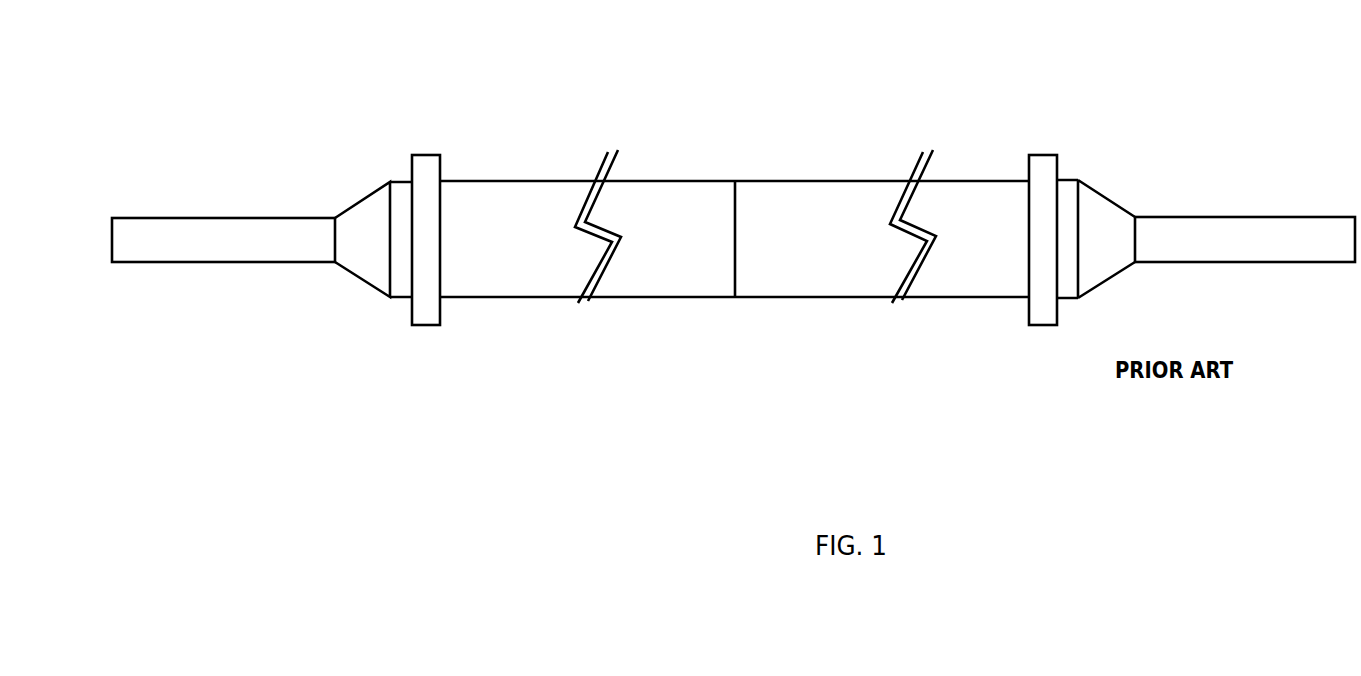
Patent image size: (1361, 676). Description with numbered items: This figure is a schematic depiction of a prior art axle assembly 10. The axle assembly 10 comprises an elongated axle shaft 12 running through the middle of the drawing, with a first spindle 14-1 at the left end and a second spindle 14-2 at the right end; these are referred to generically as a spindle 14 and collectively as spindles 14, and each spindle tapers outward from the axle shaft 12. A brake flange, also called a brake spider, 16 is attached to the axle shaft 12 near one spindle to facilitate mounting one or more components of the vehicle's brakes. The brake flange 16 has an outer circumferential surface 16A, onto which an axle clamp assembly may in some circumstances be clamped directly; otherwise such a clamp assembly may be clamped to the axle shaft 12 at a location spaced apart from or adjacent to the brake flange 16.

The axle assembly 10 is at (765, 150).
The axle shaft 12 is at (865, 195).
The spindle 14 is at (733, 176).
The first spindle 14-1 is at (290, 232).
The second spindle 14-2 is at (1190, 233).
The brake flange 16 is at (1047, 198).
The outer circumferential surface 16A is at (428, 155).